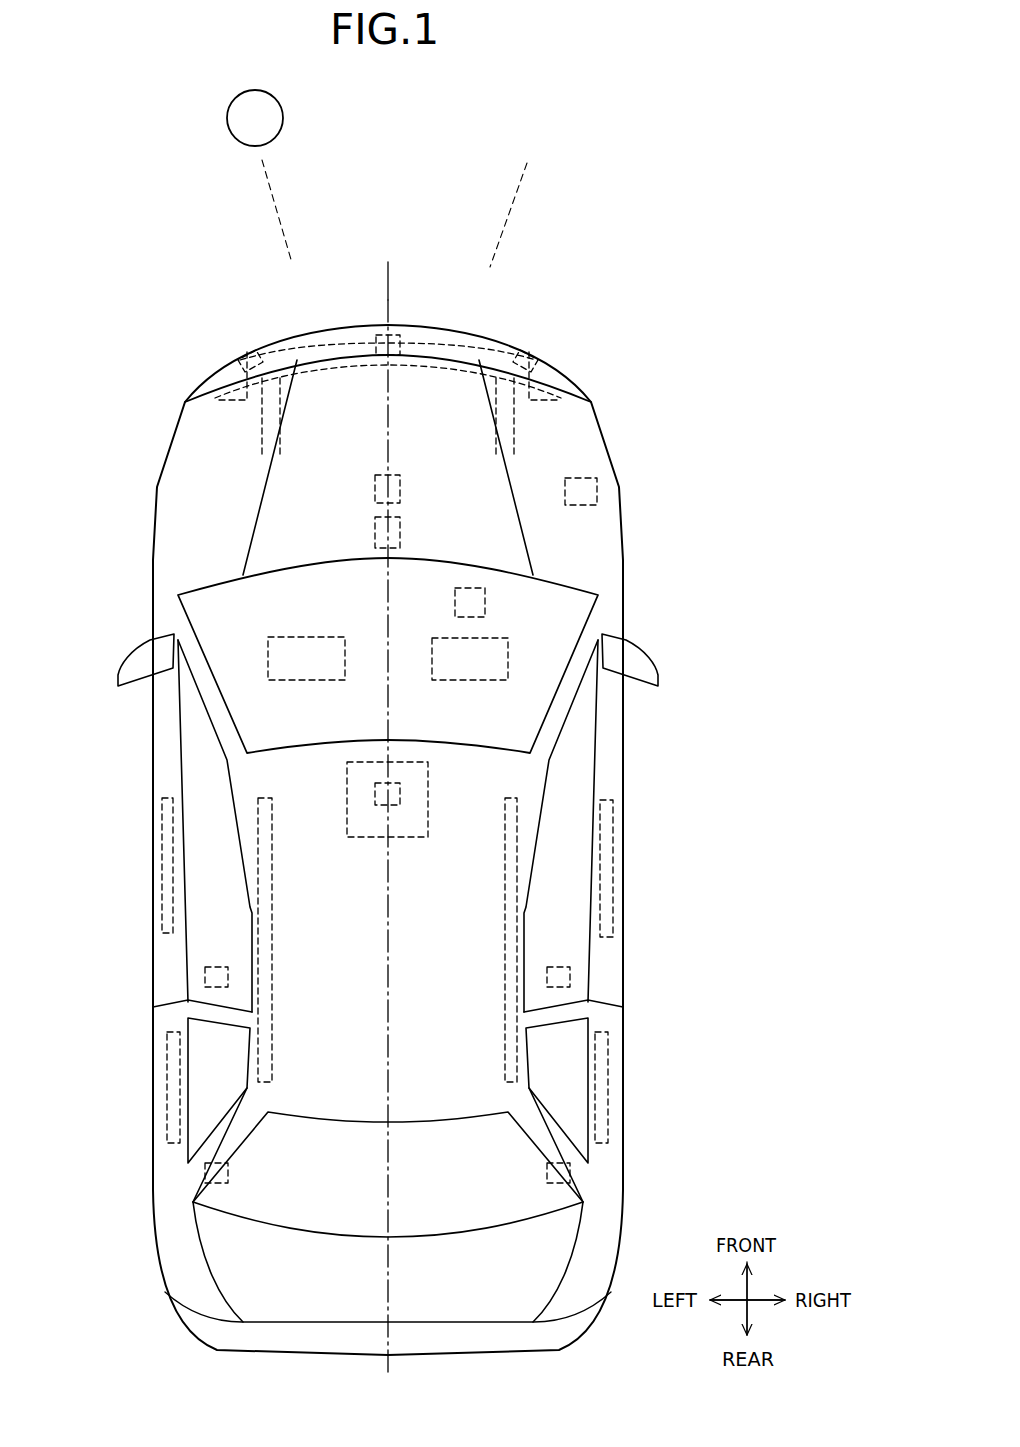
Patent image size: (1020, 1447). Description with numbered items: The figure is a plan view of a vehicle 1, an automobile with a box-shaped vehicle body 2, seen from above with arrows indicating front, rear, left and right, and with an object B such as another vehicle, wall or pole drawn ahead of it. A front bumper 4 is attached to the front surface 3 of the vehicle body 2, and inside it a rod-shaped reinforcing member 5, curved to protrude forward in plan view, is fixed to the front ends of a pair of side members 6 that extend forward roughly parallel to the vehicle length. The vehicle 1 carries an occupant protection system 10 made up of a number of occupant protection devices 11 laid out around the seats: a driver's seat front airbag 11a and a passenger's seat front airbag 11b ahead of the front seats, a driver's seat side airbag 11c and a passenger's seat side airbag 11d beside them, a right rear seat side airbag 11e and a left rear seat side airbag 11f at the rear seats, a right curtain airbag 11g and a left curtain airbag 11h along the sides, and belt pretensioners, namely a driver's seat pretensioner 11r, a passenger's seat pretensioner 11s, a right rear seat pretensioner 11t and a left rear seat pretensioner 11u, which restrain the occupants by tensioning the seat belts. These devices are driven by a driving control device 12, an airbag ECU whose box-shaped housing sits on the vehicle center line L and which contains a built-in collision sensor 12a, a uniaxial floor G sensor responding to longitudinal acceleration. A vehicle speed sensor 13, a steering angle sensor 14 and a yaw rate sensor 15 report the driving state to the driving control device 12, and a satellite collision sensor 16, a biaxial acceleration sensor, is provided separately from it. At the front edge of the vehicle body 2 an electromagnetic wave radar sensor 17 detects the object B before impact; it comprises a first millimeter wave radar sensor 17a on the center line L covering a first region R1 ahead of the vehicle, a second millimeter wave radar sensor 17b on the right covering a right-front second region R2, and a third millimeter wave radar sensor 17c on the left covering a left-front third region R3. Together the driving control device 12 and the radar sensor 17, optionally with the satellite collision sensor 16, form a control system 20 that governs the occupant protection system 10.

The vehicle 1 is at (665, 470).
The vehicle body 2 is at (625, 957).
The front surface 3 is at (557, 362).
The front bumper 4 is at (296, 345).
The reinforcing member 5 is at (478, 342).
The side member 6 is at (560, 400).
The occupant protection system 10 is at (198, 503).
The occupant protection device 11 is at (220, 605).
The driver's seat front airbag 11a is at (492, 662).
The passenger's seat front airbag 11b is at (282, 656).
The driver's seat side airbag 11c is at (616, 858).
The passenger's seat side airbag 11d is at (160, 855).
The right rear seat side airbag 11e is at (608, 1085).
The left rear seat side airbag 11f is at (167, 1080).
The right curtain airbag 11g is at (522, 806).
The left curtain airbag 11h is at (262, 804).
The driver's seat pretensioner 11r is at (570, 977).
The passenger's seat pretensioner 11s is at (205, 977).
The right rear seat pretensioner 11t is at (570, 1173).
The left rear seat pretensioner 11u is at (205, 1173).
The driving control device 12 is at (410, 837).
The built-in collision sensor 12a is at (400, 796).
The vehicle speed sensor 13 is at (597, 498).
The steering angle sensor 14 is at (485, 603).
The yaw rate sensor 15 is at (372, 534).
The satellite collision sensor 16 is at (398, 490).
The electromagnetic wave radar sensor 17 is at (205, 352).
The first millimeter wave radar sensor 17a is at (382, 335).
The second millimeter wave radar sensor 17b is at (533, 350).
The third millimeter wave radar sensor 17c is at (244, 350).
The control system 20 is at (520, 770).
The object B is at (235, 120).
The vehicle center line L is at (400, 285).
The first region R1 is at (386, 170).
The second region R2 is at (634, 210).
The third region R3 is at (139, 207).